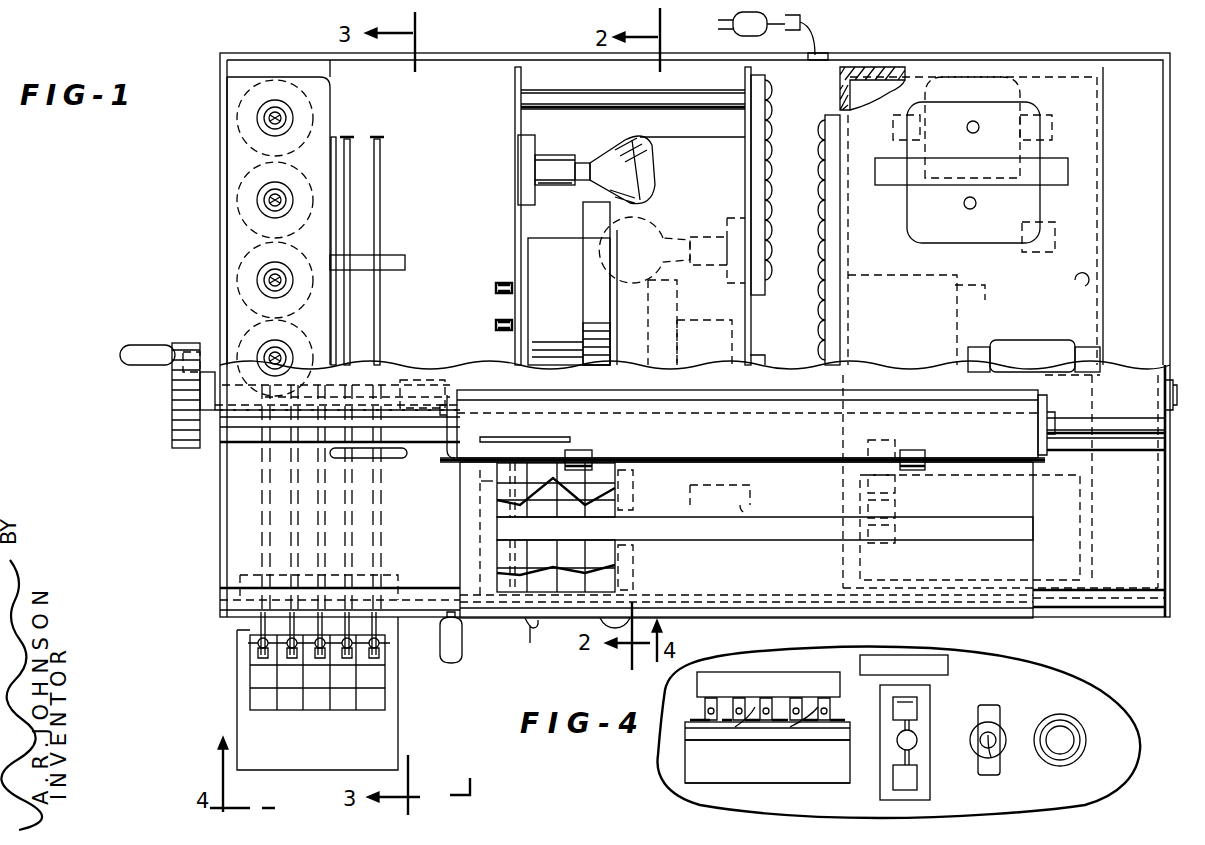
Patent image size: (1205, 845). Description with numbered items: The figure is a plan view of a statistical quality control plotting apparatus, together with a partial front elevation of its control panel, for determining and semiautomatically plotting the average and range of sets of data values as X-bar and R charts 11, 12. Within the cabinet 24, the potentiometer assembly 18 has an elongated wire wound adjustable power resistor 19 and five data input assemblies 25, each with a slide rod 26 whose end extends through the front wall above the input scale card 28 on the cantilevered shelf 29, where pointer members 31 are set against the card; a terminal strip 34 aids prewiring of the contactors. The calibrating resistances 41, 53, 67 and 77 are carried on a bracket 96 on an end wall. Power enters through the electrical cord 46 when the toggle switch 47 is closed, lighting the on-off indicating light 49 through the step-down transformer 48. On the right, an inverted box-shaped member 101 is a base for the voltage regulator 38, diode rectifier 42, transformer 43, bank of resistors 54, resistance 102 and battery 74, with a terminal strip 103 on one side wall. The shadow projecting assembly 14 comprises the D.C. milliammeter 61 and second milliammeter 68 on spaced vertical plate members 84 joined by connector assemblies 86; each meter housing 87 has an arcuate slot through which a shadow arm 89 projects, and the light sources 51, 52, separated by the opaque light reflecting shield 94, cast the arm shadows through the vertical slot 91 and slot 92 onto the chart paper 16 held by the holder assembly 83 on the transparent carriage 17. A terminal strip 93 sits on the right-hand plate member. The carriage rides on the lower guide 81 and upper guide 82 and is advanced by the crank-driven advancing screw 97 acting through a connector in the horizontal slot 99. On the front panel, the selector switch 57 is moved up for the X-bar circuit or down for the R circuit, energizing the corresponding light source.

In FIG. 1, the X-bar chart 11 is at (497, 500).
In FIG. 1, the R chart 12 is at (497, 573).
In FIG. 1, the shadow projecting assembly 14 is at (515, 164).
In FIG. 1, the chart paper 16 is at (465, 545).
In FIG. 1, the carriage 17 is at (465, 475).
In FIG. 1, the potentiometer assembly 18 is at (418, 310).
In FIG. 1, the wire wound adjustable power resistor 19 is at (340, 136).
In FIG. 1, the cabinet 24 is at (505, 44).
In FIG. 4, the cabinet 24 is at (1056, 689).
In FIG. 1, the data input assemblies 25 is at (260, 655).
In FIG. 4, the data input assemblies 25 is at (810, 730).
In FIG. 1, the slide rods 26 is at (350, 190).
In FIG. 4, the slide rods 26 is at (735, 720).
In FIG. 1, the input scale card 28 is at (262, 702).
In FIG. 4, the input scale card 28 is at (830, 717).
In FIG. 1, the shelf 29 is at (258, 740).
In FIG. 4, the shelf 29 is at (832, 740).
In FIG. 1, the pointer members 31 is at (258, 645).
In FIG. 4, the pointer members 31 is at (705, 712).
In FIG. 1, the terminal strip 34 is at (398, 262).
In FIG. 1, the voltage regulator 38 is at (980, 284).
In FIG. 1, the adjustable calibrating resistance 41 is at (258, 355).
In FIG. 1, the diode rectifier 42 is at (1043, 246).
In FIG. 1, the transformer 43 is at (1025, 84).
In FIG. 1, the electrical cord 46 is at (803, 24).
In FIG. 1, the toggle switch 47 is at (530, 643).
In FIG. 4, the toggle switch 47 is at (1000, 730).
In FIG. 1, the step-down transformer 48 is at (1045, 354).
In FIG. 1, the on-off indicating light 49 is at (640, 627).
In FIG. 4, the on-off indicating light 49 is at (1068, 724).
In FIG. 1, the light source 51 is at (545, 175).
In FIG. 1, the light source 52 is at (693, 236).
In FIG. 1, the adjustable calibrating resistance 53 is at (258, 205).
In FIG. 1, the resistors 54 is at (890, 448).
In FIG. 1, the selector switch 57 is at (462, 650).
In FIG. 4, the selector switch 57 is at (917, 735).
In FIG. 1, the D.C. milliammeter 61 is at (542, 268).
In FIG. 1, the adjustable calibrating resistance 67 is at (258, 124).
In FIG. 1, the milliammeter 68 is at (744, 331).
In FIG. 1, the battery 74 is at (1030, 152).
In FIG. 1, the adjustable calibrating resistance 77 is at (258, 283).
In FIG. 1, the guide 81 is at (223, 589).
In FIG. 1, the upper guide 82 is at (220, 445).
In FIG. 1, the holder assembly 83 is at (575, 450).
In FIG. 1, the plate members 84 is at (765, 180).
In FIG. 1, the connector assemblies 86 is at (620, 106).
In FIG. 1, the housing 87 is at (593, 238).
In FIG. 1, the shadow arm 89 is at (620, 343).
In FIG. 1, the vertical slot 91 is at (638, 505).
In FIG. 1, the slot 92 is at (637, 565).
In FIG. 1, the terminal strip 93 is at (763, 245).
In FIG. 1, the opaque light reflecting shield 94 is at (693, 160).
In FIG. 1, the bracket 96 is at (228, 161).
In FIG. 1, the advancing screw 97 is at (195, 392).
In FIG. 1, the slot 99 is at (393, 460).
In FIG. 1, the inverted box-shaped member 101 is at (883, 67).
In FIG. 1, the resistance 102 is at (1085, 280).
In FIG. 1, the terminal strip 103 is at (840, 261).